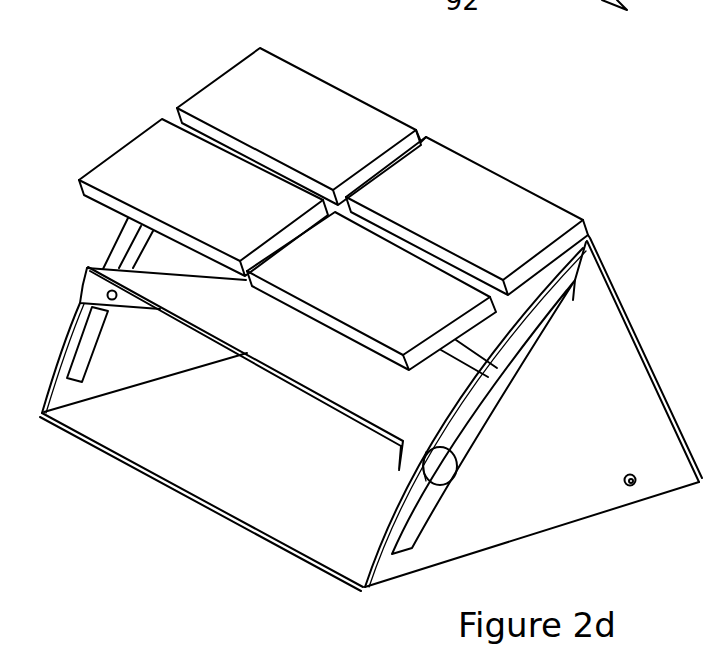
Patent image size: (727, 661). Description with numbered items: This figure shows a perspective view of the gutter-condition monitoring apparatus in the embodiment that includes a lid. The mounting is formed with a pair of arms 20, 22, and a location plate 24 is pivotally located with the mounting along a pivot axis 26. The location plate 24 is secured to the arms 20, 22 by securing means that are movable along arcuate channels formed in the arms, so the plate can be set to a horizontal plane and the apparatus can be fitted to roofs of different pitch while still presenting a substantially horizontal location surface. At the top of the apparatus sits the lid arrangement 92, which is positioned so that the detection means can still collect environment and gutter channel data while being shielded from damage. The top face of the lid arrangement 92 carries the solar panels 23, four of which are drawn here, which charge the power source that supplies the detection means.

The arm 20 is at (118, 252).
The arm 22 is at (630, 393).
The solar panel 23 is at (248, 83).
The location plate 24 is at (322, 370).
The pivot axis 26 is at (633, 487).
The lid arrangement 92 is at (458, 185).